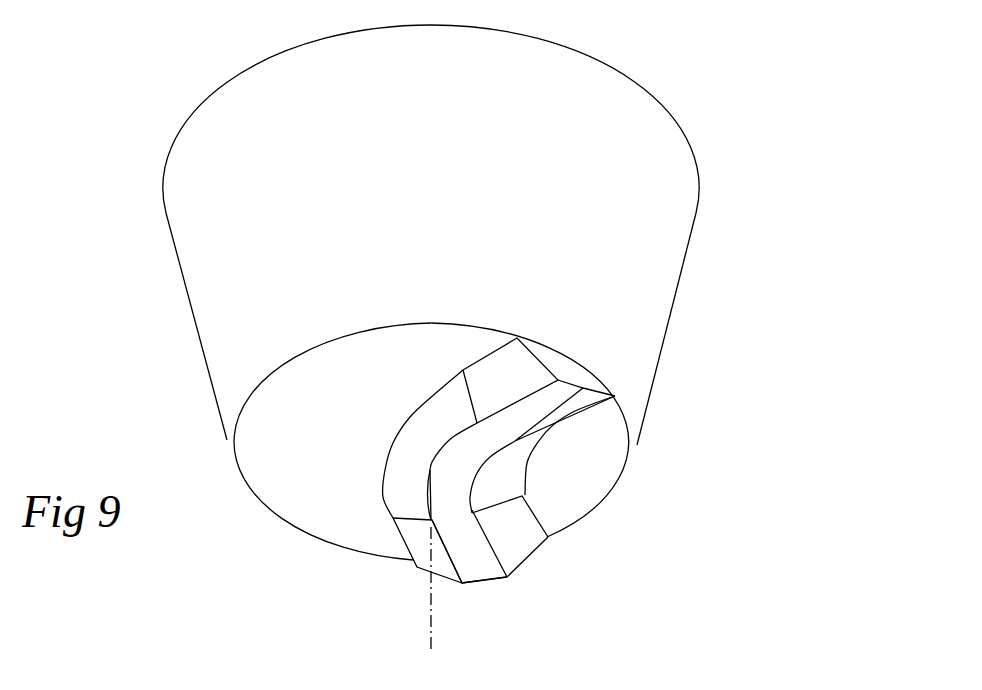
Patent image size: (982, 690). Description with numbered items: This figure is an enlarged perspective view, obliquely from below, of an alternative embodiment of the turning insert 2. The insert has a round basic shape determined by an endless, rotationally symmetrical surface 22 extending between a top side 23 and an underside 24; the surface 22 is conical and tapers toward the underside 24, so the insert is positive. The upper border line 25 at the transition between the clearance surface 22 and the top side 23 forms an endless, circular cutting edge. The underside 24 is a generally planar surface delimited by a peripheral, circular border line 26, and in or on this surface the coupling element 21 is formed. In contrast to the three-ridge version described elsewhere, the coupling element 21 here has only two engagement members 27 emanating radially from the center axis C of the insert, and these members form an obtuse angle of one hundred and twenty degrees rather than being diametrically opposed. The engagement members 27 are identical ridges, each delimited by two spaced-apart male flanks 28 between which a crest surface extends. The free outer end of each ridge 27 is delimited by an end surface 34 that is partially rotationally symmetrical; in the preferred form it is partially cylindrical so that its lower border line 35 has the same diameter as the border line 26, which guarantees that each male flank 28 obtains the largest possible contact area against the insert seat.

The turning insert 2 is at (724, 275).
The coupling element 21 is at (504, 457).
The rotationally symmetrical surface 22 is at (456, 220).
The top side 23 is at (645, 78).
The underside 24 is at (342, 493).
The upper border line 25 is at (277, 53).
The circular border line 26 is at (338, 337).
The engagement member 27 is at (601, 430).
The male flank 28 is at (418, 563).
The end surface 34 is at (558, 358).
The lower border line 35 is at (577, 383).
The center axis C is at (433, 625).